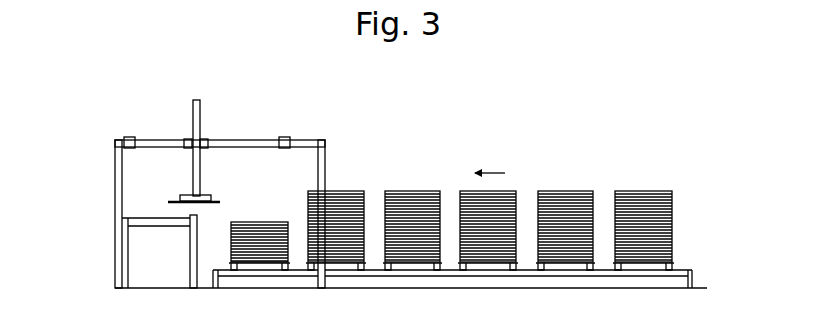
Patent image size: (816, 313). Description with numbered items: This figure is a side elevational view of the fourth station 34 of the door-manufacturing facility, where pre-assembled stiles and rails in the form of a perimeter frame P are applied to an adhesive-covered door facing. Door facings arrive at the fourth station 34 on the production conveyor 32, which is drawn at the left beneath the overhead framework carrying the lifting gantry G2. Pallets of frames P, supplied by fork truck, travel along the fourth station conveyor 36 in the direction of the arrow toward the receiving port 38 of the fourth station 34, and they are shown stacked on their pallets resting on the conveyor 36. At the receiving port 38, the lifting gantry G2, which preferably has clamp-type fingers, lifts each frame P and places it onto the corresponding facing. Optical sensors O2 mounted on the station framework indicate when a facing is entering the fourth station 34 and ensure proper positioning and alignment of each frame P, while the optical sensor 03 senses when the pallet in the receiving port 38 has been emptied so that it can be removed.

The fourth station 34 is at (243, 128).
The optical sensors O2 is at (129, 130).
The optical sensor 03 is at (297, 136).
The lifting gantry G2 is at (184, 192).
The production conveyor 32 is at (140, 204).
The fourth station conveyor 36 is at (373, 270).
The receiving port 38 is at (273, 210).
The perimeter frame P is at (573, 191).